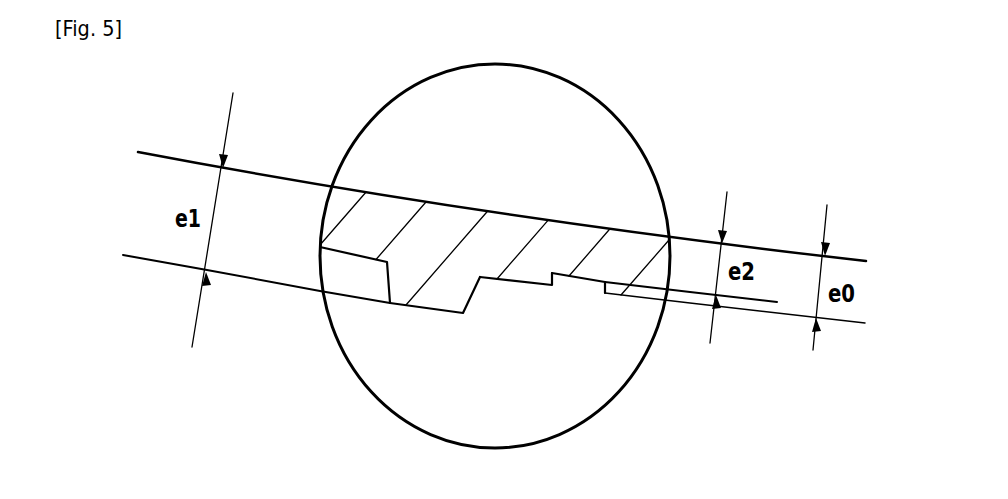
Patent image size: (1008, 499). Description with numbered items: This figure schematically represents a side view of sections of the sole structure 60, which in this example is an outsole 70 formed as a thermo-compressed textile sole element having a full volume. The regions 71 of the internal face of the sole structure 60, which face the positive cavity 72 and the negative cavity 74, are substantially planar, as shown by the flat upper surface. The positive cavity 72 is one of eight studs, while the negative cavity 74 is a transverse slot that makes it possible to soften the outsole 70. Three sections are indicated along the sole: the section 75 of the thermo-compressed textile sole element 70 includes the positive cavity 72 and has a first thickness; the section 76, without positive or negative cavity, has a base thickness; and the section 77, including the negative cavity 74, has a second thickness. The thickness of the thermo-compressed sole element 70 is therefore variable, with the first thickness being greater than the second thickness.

The sole structure 60 is at (487, 346).
The outsole 70 is at (389, 314).
The regions of the internal face 71 is at (407, 199).
The positive cavity 72 is at (402, 278).
The negative cavity 74 is at (577, 280).
The section including the positive cavity 75 is at (462, 325).
The section without positive or negative cavity 76 is at (544, 337).
The section including the negative cavity 77 is at (601, 346).